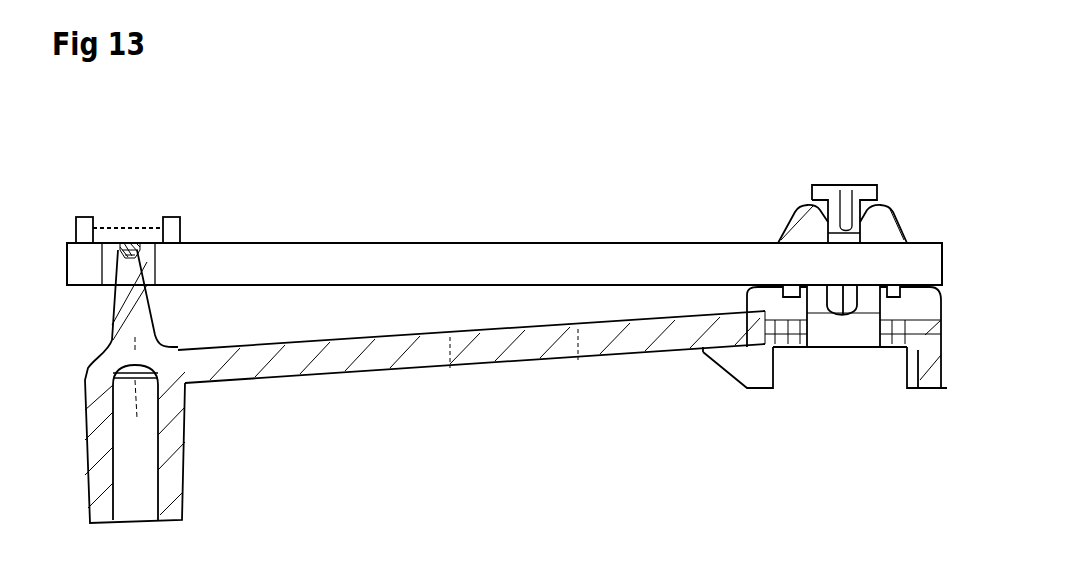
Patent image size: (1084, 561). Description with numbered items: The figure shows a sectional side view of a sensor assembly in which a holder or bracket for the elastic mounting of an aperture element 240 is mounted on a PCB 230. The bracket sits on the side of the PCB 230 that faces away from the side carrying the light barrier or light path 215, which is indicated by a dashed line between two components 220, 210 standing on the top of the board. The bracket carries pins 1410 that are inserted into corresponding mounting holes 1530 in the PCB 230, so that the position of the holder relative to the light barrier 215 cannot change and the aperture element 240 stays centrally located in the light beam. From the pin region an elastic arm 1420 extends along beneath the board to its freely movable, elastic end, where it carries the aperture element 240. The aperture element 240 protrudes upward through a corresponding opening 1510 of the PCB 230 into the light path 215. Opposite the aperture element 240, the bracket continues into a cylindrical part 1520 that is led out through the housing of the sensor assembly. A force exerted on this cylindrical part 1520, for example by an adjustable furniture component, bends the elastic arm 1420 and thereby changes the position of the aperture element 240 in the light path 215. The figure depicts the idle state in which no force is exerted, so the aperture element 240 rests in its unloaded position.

The contact pin 210 is at (175, 217).
The light barrier 215 is at (108, 228).
The contact pin 220 is at (83, 217).
The PCB 230 is at (378, 243).
The aperture element 240 is at (143, 284).
The pins 1410 is at (827, 185).
The elastic arm 1420 is at (478, 358).
The opening 1510 is at (147, 258).
The cylindrical part 1520 is at (168, 475).
The mounting holes 1530 is at (787, 227).